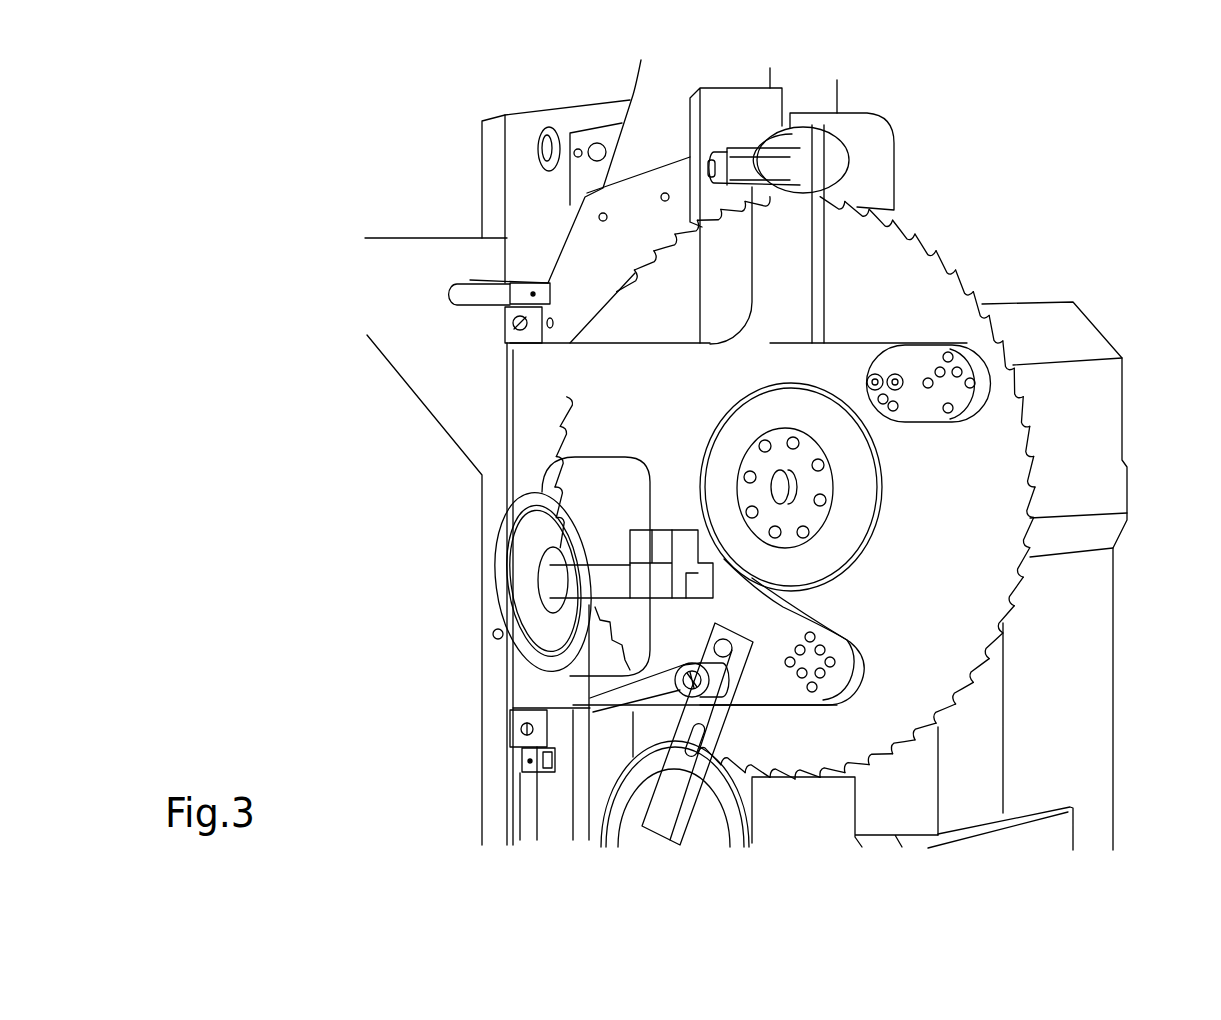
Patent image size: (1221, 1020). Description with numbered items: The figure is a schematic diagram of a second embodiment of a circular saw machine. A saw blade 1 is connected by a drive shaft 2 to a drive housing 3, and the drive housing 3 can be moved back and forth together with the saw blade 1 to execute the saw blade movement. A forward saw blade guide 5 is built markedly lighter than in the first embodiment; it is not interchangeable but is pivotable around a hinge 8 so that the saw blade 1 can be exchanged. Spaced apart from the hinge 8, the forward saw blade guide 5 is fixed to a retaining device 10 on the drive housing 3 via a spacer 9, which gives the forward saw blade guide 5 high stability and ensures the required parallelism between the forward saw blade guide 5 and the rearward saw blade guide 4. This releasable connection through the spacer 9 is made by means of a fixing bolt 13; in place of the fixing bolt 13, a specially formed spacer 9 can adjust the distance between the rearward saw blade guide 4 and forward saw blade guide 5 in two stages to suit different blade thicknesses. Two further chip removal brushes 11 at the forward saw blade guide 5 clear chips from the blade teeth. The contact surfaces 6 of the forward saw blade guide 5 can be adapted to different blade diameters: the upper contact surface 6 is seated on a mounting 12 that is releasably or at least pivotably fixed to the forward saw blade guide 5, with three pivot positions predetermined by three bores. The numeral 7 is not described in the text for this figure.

The saw blade 1 is at (953, 617).
The drive shaft 2 is at (793, 497).
The drive housing 3 is at (1082, 348).
The rearward saw blade guide 4 is at (782, 632).
The forward saw blade guide 5 is at (793, 283).
The contact surfaces 6 is at (990, 415).
The lower housing 7 is at (596, 566).
The hinge 8 is at (523, 358).
The spacer 9 is at (821, 135).
The retaining device 10 is at (877, 133).
The chip removal brushes 11 is at (620, 813).
The mounting 12 is at (927, 363).
The fixing bolt 13 is at (894, 375).